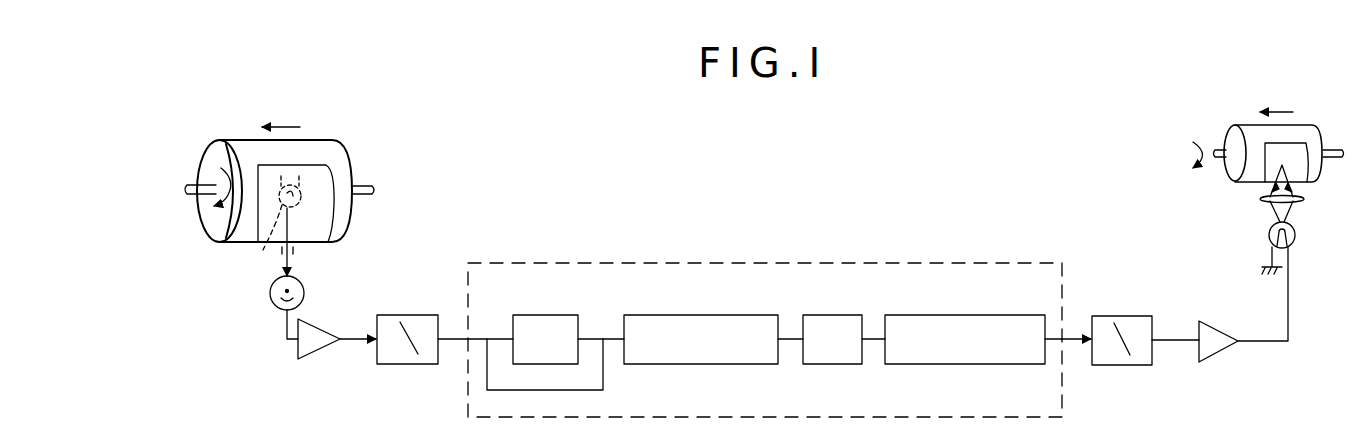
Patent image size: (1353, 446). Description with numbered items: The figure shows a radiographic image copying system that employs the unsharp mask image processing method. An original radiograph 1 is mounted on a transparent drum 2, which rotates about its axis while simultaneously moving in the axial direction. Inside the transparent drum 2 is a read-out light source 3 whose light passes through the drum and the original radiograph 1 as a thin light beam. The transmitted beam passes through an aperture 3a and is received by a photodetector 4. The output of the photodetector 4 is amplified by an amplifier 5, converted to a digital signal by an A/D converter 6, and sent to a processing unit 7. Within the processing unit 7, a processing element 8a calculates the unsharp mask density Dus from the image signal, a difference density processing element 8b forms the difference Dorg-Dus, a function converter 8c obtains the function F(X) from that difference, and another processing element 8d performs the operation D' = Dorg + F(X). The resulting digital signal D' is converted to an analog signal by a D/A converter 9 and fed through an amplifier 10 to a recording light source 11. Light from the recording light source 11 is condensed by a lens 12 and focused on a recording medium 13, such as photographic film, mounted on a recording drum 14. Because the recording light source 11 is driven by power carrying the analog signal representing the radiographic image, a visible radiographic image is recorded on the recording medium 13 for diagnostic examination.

The original radiograph 1 is at (320, 222).
The transparent drum 2 is at (340, 158).
The read-out light source 3 is at (264, 249).
The aperture 3a is at (293, 251).
The photodetector 4 is at (270, 293).
The amplifier 5 is at (325, 350).
The A/D converter 6 is at (422, 314).
The processing unit 7 is at (878, 262).
The processing element for calculating the unsharp mask density 8a is at (558, 313).
The difference density processing element 8b is at (708, 313).
The function converter 8c is at (835, 313).
The processing element 8d is at (983, 313).
The D/A converter 9 is at (1128, 316).
The amplifier 10 is at (1226, 354).
The recording light source 11 is at (1272, 240).
The lens 12 is at (1262, 200).
The recording medium 13 is at (1298, 168).
The recording drum 14 is at (1308, 133).